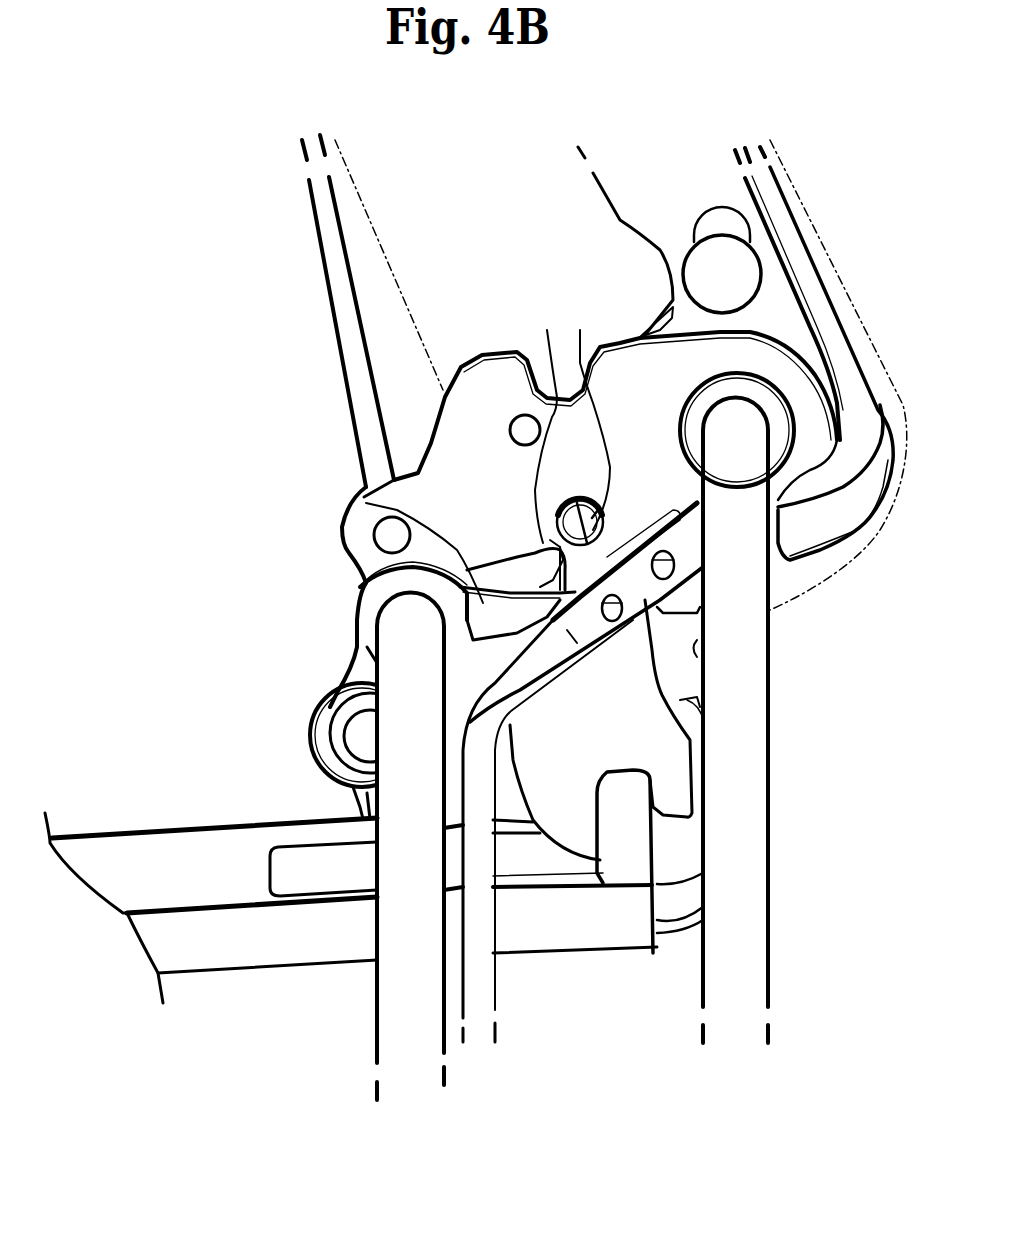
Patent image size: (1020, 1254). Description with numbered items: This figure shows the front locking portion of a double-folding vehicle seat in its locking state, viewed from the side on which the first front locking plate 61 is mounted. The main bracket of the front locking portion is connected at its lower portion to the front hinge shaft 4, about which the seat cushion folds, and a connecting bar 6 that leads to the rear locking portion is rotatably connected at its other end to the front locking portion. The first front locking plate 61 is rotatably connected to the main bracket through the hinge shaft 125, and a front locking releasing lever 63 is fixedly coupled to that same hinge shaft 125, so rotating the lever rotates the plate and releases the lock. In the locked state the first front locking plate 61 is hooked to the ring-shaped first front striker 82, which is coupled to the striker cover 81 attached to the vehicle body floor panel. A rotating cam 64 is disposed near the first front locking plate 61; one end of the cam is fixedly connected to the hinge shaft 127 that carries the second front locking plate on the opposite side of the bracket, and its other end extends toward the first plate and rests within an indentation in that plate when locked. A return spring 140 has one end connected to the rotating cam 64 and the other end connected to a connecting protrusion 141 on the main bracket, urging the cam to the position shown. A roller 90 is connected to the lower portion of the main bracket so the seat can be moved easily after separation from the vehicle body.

The front hinge shaft 4 is at (768, 750).
The connecting bar 6 is at (330, 287).
The first front locking plate 61 is at (650, 690).
The front locking releasing lever 63 is at (490, 985).
The rotating cam 64 is at (363, 503).
The striker cover 81 is at (215, 967).
The first front striker 82 is at (637, 840).
The roller 90 is at (311, 734).
The hinge shaft 125 is at (620, 627).
The hinge shaft 127 is at (390, 738).
The return spring 140 is at (553, 400).
The connecting protrusion 141 is at (580, 363).